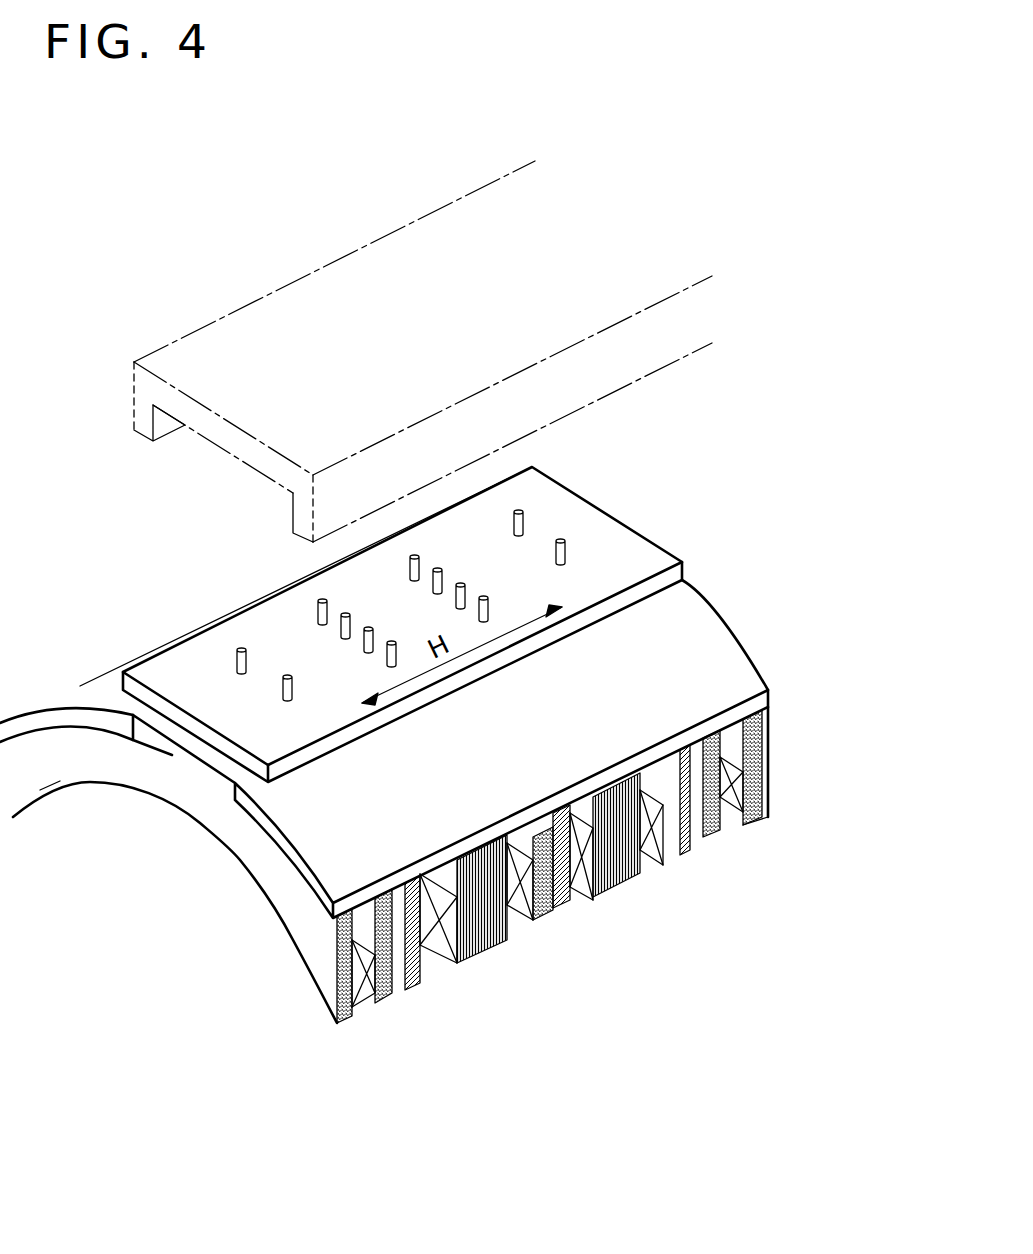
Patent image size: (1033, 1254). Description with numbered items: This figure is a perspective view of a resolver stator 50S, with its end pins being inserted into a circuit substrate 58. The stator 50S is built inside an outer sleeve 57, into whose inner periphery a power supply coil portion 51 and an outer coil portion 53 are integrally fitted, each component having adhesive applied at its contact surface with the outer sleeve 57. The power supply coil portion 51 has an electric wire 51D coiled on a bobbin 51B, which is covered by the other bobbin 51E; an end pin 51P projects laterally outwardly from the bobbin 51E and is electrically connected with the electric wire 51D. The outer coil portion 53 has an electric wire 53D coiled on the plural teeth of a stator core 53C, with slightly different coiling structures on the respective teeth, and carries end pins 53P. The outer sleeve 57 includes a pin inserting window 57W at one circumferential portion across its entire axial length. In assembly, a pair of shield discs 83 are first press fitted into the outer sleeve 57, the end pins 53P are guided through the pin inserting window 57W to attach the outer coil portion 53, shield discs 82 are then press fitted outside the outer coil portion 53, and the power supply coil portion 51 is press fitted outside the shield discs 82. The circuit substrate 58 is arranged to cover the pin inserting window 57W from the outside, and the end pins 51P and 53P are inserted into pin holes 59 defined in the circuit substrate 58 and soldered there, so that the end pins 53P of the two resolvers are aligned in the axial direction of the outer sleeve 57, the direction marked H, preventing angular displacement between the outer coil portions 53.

The stator 50S is at (748, 601).
The power supply coil portion 51 is at (605, 931).
The bobbin 51B is at (365, 1006).
The electric wire 51D is at (386, 1004).
The bobbin 51E is at (345, 1024).
The end pin 51P is at (523, 514).
The outer coil portion 53 is at (571, 932).
The stator core 53C is at (520, 962).
The electric wire 53D is at (622, 1002).
The end pin 53P is at (484, 598).
The outer sleeve 57 is at (310, 845).
The pin inserting window 57W is at (160, 735).
The circuit substrate 58 is at (200, 738).
The pin hole 59 is at (233, 674).
The shield disc 82 is at (412, 991).
The shield disc 83 is at (556, 910).